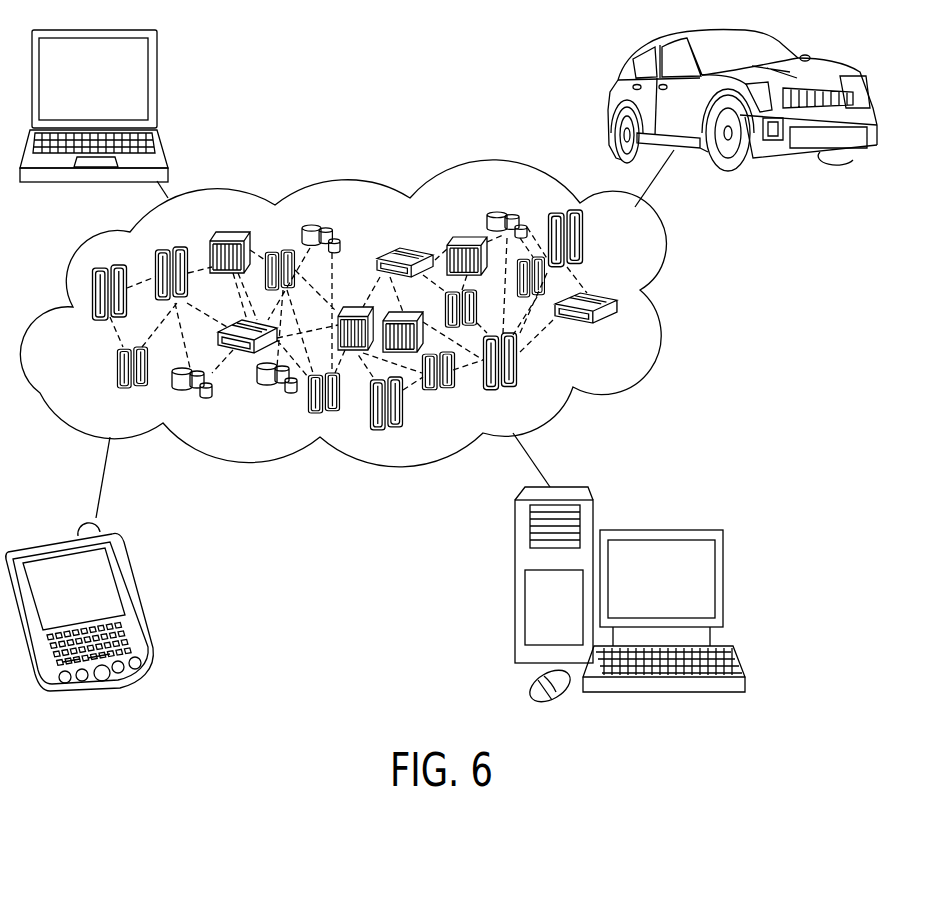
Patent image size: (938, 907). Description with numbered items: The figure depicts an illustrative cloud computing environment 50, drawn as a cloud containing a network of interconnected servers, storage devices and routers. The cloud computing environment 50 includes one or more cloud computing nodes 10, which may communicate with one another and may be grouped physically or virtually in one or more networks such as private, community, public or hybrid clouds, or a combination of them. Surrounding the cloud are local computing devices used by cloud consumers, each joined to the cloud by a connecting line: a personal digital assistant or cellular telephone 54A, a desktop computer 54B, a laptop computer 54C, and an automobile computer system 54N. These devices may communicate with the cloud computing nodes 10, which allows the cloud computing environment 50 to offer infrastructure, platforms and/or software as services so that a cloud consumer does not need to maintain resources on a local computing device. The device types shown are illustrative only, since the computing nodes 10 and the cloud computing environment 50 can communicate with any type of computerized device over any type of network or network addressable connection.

The cloud computing node 10 is at (629, 341).
The cloud computing environment 50 is at (680, 243).
The personal digital assistant or cellular telephone 54A is at (128, 577).
The desktop computer 54B is at (723, 578).
The laptop computer 54C is at (158, 82).
The automobile computer system 54N is at (790, 52).